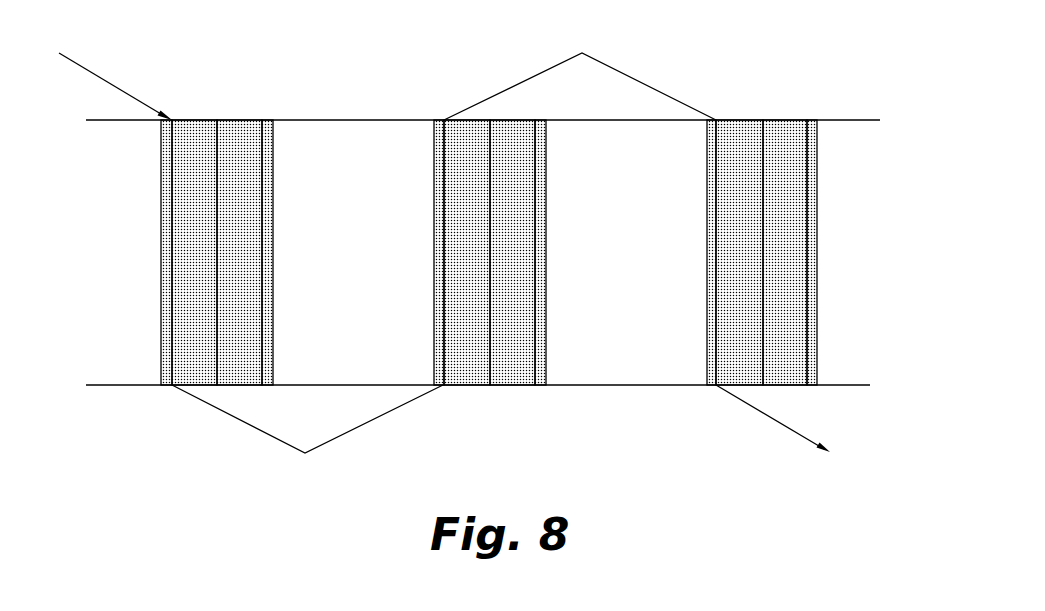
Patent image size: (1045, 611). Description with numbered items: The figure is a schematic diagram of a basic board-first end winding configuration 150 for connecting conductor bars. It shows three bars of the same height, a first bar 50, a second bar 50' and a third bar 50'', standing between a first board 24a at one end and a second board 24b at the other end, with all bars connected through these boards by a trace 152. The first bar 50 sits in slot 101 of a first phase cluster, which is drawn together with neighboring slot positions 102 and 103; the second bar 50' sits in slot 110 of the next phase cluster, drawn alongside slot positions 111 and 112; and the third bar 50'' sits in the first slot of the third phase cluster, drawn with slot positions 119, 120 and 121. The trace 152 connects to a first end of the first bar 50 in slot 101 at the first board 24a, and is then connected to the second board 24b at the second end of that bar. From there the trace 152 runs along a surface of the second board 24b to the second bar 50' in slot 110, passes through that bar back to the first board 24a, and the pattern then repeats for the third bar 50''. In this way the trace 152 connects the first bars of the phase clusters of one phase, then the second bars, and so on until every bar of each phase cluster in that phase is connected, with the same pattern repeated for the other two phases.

The first board 24a is at (105, 121).
The second board 24b is at (838, 384).
The first bar 50 is at (222, 221).
The second bar 50' is at (488, 276).
The third bar 50'' is at (749, 227).
The slot 101 is at (193, 136).
The second layer 102 is at (243, 133).
The third layer 103 is at (268, 145).
The slot 110 is at (460, 378).
The second layer of second stack 111 is at (510, 378).
The third layer of second stack 112 is at (543, 372).
The first layer of third stack 119 is at (740, 133).
The second layer of third stack 120 is at (777, 133).
The third layer of third stack 121 is at (812, 145).
The winding configuration 150 is at (870, 191).
The trace 152 is at (88, 73).